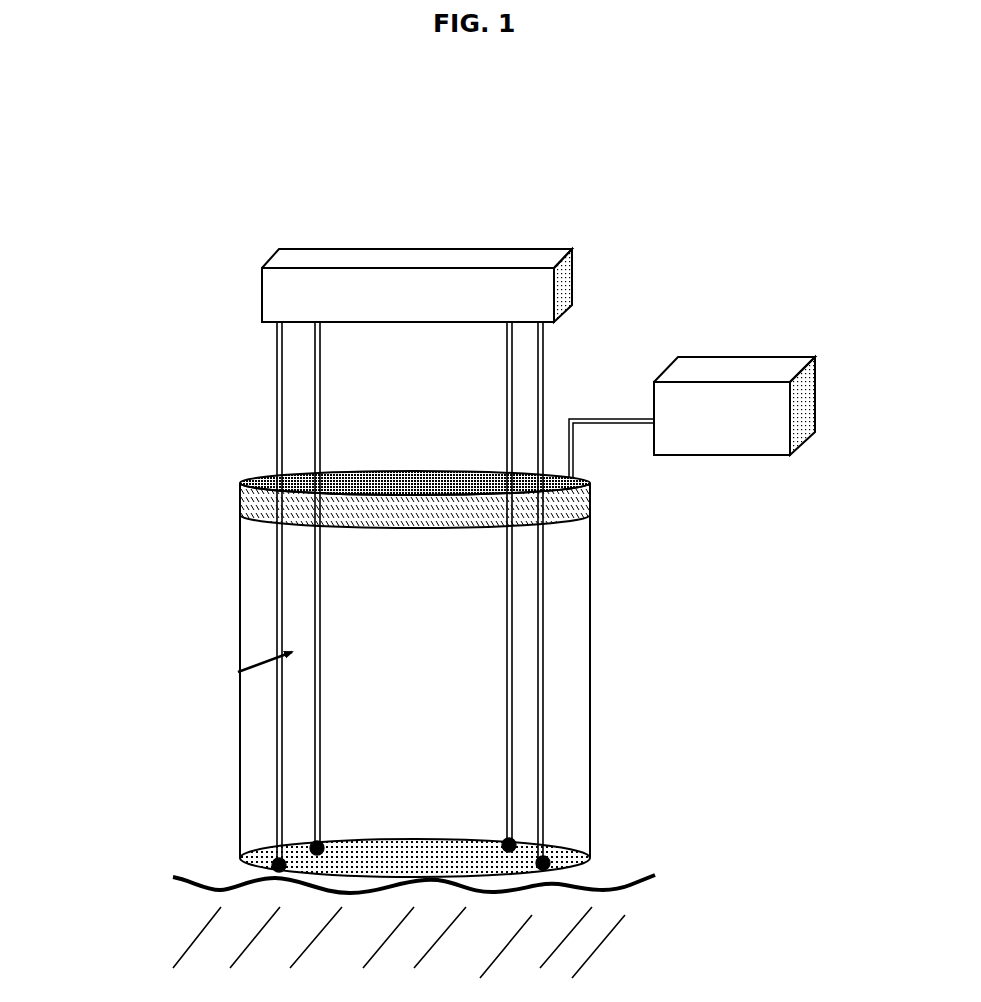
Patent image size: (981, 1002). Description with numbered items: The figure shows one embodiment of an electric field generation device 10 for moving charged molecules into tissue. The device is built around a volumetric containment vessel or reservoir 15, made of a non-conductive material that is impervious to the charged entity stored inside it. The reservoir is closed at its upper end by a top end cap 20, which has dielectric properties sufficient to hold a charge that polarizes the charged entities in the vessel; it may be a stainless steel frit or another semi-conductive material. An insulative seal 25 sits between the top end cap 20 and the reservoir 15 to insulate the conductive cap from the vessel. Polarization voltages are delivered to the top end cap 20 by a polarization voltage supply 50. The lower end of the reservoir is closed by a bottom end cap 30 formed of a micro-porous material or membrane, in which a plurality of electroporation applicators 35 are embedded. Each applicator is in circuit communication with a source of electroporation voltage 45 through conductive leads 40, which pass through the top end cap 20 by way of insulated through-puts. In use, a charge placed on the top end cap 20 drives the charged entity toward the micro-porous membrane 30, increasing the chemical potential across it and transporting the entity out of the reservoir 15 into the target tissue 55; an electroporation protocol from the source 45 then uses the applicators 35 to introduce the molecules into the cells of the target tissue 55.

The electric field generation device 10 is at (198, 203).
The reservoir 15 is at (240, 608).
The top end cap 20 is at (270, 472).
The insulative seal 25 is at (240, 498).
The bottom end cap 30 is at (567, 847).
The electroporation applicators 35 is at (270, 853).
The conductive leads 40 is at (542, 670).
The source of electroporation voltage 45 is at (572, 280).
The polarization voltage supply 50 is at (700, 357).
The target tissue 55 is at (630, 903).